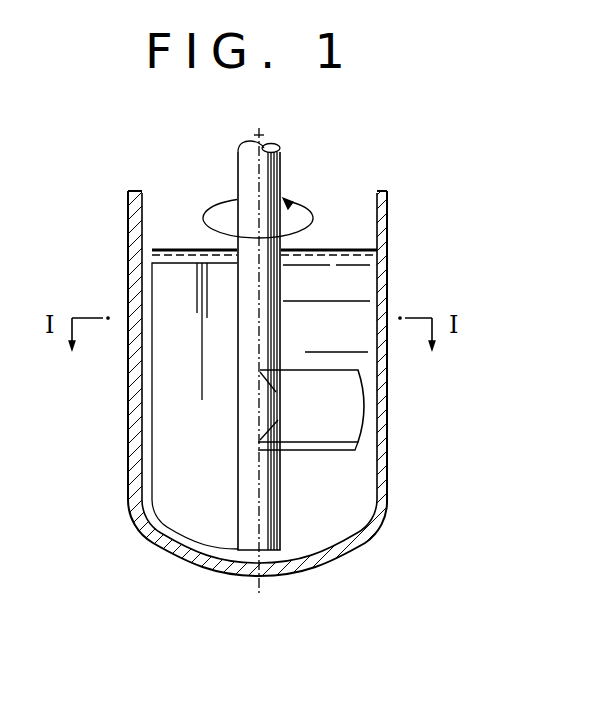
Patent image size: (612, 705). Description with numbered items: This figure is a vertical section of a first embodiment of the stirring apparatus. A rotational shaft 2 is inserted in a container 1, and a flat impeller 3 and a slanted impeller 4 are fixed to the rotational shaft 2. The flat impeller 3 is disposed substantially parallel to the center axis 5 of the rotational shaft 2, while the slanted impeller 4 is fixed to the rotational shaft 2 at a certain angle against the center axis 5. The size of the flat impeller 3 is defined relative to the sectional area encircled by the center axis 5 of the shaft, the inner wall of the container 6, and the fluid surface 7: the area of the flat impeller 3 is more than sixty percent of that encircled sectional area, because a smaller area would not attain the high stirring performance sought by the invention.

The container 1 is at (388, 204).
The rotational shaft 2 is at (282, 167).
The flat impeller 3 is at (165, 480).
The slanted impeller 4 is at (358, 410).
The center axis 5 is at (267, 139).
The inner wall of the container 6 is at (136, 432).
The fluid surface 7 is at (158, 250).